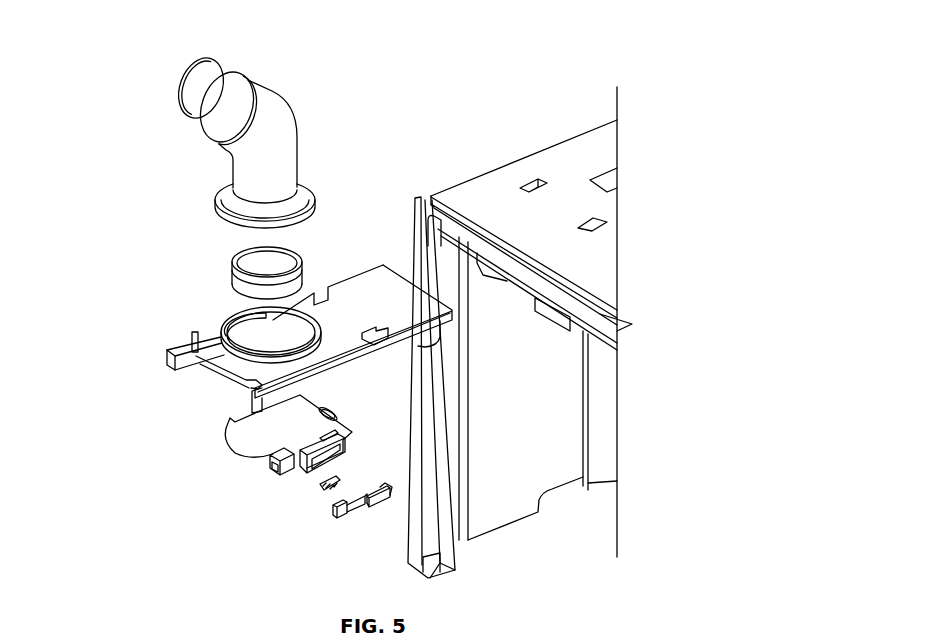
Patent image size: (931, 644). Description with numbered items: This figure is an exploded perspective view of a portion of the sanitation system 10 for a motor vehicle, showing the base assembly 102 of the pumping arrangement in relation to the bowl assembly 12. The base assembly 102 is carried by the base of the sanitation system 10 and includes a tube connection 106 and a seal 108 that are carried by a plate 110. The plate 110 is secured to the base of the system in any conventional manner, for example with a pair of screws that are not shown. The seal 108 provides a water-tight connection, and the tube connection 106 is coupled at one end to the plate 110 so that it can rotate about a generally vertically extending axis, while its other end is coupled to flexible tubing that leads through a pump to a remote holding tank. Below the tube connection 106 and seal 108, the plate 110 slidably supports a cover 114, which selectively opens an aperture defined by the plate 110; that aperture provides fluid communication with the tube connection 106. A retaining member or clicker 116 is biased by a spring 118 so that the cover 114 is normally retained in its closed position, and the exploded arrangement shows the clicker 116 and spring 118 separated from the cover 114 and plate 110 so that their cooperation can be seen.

The sanitation system 10 is at (116, 78).
The bowl assembly 12 is at (542, 163).
The base assembly 102 is at (180, 324).
The tube connection 106 is at (278, 106).
The seal 108 is at (297, 256).
The plate 110 is at (217, 322).
The cover 114 is at (241, 462).
The retaining member or clicker 116 is at (374, 509).
The spring 118 is at (322, 491).